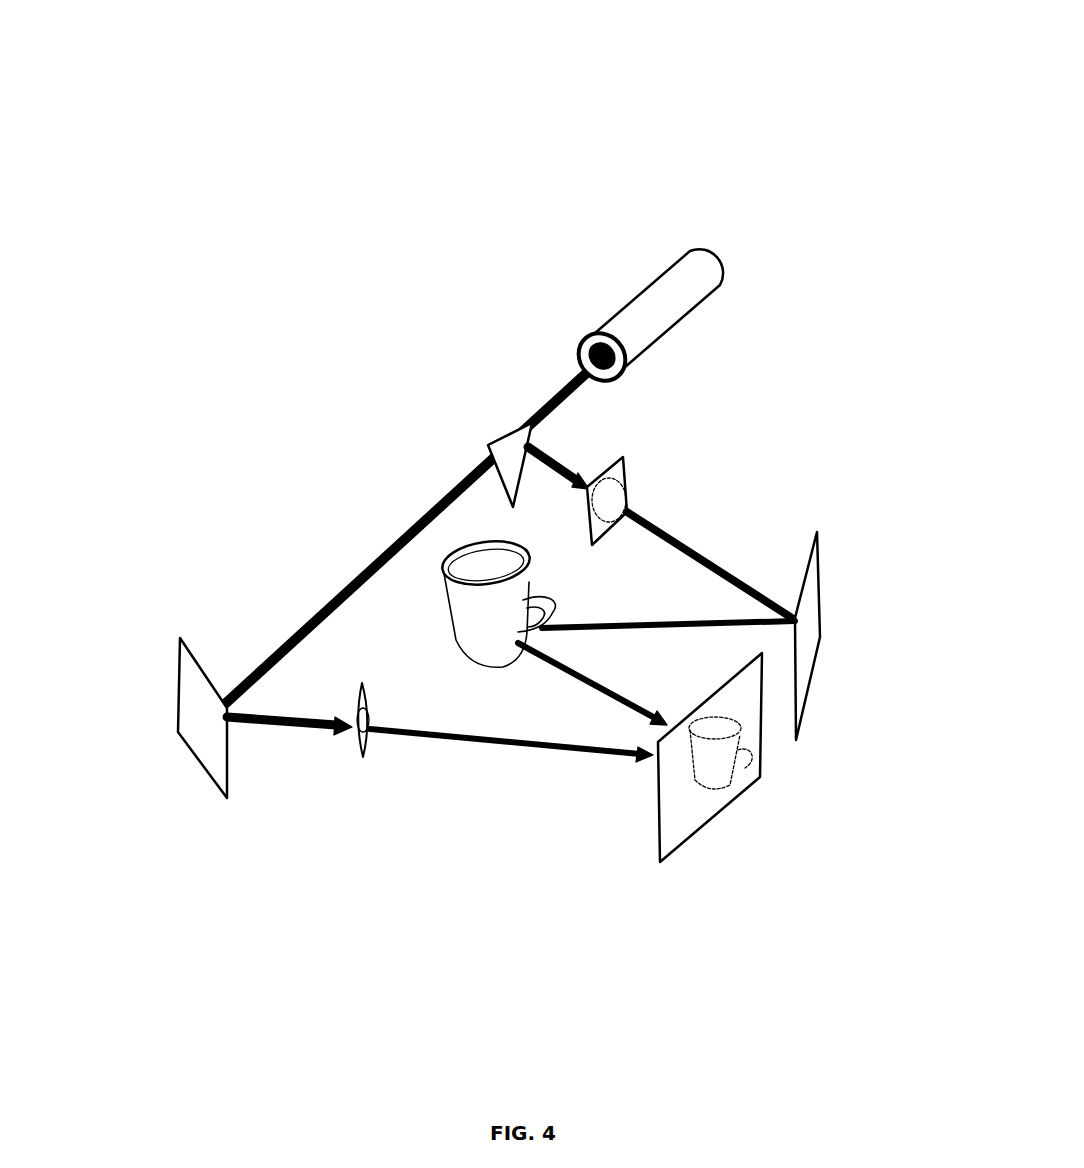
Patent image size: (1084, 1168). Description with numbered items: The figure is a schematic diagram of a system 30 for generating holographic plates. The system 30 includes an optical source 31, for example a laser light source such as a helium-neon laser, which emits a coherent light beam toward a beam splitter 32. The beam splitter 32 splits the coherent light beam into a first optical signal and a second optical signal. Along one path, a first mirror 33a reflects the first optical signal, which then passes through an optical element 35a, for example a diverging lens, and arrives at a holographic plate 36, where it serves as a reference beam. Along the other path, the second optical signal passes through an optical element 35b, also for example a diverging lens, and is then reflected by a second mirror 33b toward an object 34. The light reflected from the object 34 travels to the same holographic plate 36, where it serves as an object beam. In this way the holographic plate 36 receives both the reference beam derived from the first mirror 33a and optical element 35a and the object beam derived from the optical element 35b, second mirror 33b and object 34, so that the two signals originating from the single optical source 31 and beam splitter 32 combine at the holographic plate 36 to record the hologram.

The system 30 is at (753, 107).
The optical source 31 is at (668, 321).
The beam splitter 32 is at (488, 447).
The first mirror 33a is at (198, 688).
The second mirror 33b is at (808, 587).
The object 34 is at (441, 582).
The optical element 35a is at (355, 710).
The optical element 35b is at (625, 482).
The holographic plate 36 is at (685, 817).